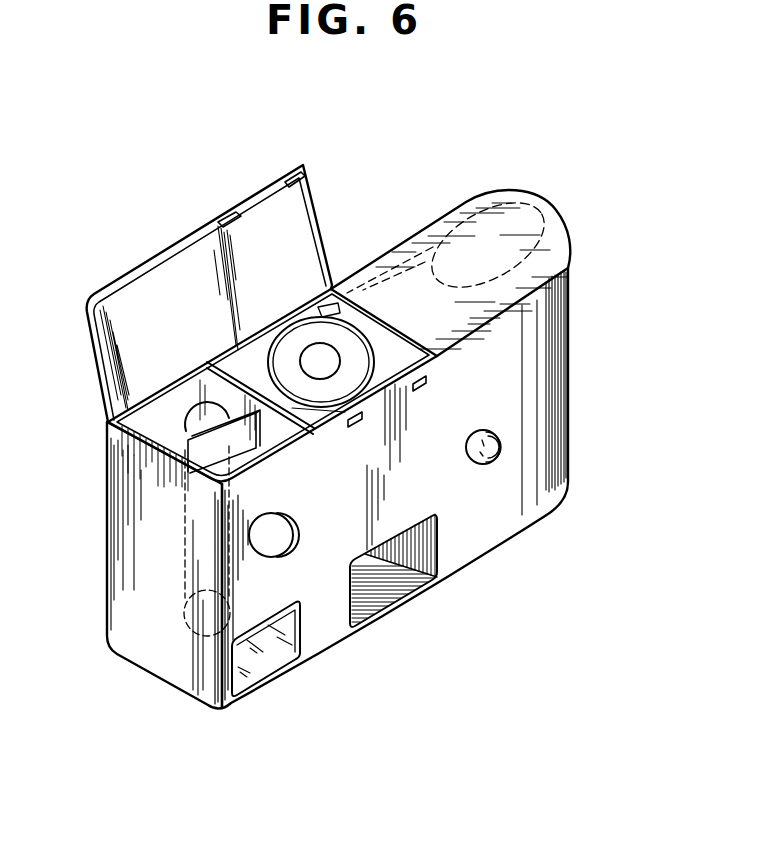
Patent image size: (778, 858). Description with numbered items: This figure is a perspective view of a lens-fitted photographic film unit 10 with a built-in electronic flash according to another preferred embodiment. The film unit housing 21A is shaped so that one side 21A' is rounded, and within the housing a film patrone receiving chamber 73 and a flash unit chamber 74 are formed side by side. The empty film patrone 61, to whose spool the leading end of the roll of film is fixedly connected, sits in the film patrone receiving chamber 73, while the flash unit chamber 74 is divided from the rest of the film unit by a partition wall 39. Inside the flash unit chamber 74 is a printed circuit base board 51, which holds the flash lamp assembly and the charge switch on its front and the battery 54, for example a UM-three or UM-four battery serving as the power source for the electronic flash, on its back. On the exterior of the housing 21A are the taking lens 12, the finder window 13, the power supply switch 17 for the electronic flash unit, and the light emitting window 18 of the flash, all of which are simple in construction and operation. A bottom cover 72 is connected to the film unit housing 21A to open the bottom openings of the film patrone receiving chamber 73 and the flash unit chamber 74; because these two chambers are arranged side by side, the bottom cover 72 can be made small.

The lens-fitted photographic film unit 10 is at (405, 160).
The taking lens 12 is at (484, 466).
The finder window 13 is at (390, 592).
The power supply switch 17 is at (277, 537).
The light emitting window 18 is at (256, 655).
The film unit housing 21A is at (126, 558).
The rounded side 21A' is at (489, 270).
The partition wall 39 is at (304, 413).
The printed circuit base board 51 is at (188, 477).
The battery 54 is at (169, 450).
The film patrone 61 is at (328, 392).
The bottom cover 72 is at (177, 260).
The film patrone receiving chamber 73 is at (253, 357).
The flash unit chamber 74 is at (118, 436).